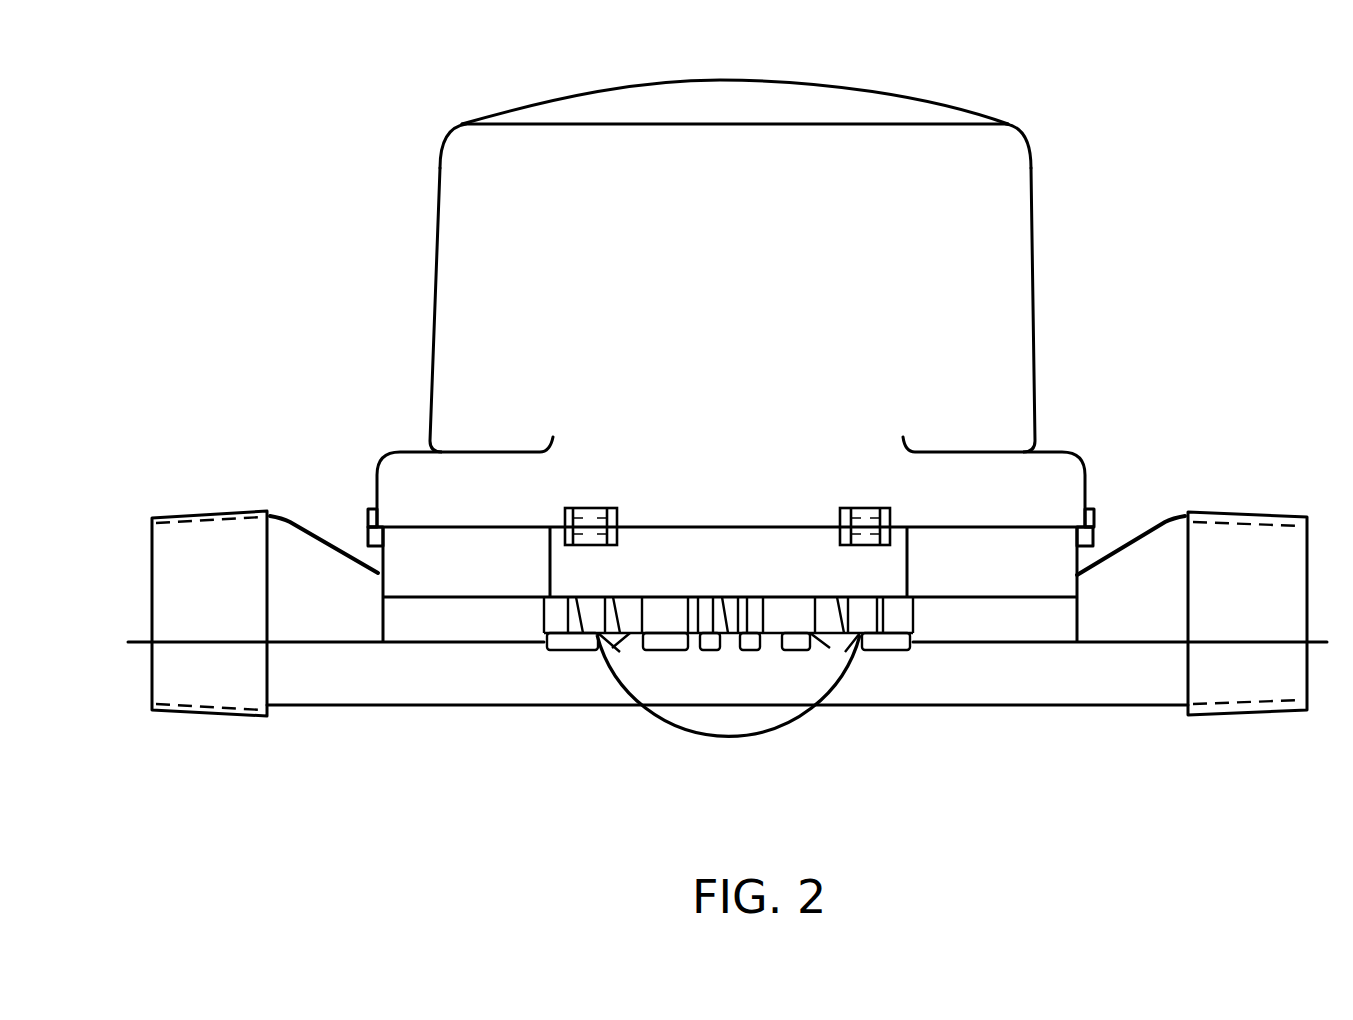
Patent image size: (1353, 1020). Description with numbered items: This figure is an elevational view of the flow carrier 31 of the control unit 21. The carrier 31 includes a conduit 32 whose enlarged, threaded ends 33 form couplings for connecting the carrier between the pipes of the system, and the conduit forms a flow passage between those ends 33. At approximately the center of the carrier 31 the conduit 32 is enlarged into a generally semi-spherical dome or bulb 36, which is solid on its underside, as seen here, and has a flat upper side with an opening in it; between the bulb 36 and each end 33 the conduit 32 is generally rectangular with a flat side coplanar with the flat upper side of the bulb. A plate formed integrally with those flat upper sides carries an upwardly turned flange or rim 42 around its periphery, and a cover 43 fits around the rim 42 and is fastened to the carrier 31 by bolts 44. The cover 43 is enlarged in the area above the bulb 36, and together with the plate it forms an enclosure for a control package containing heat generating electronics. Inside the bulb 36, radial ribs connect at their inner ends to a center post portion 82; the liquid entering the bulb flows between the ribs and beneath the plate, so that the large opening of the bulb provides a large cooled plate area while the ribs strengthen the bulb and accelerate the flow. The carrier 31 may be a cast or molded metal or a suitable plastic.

The control unit 21 is at (1066, 360).
The flow carrier 31 is at (1143, 491).
The conduit 32 is at (957, 693).
The ends 33 is at (195, 543).
The semi-spherical dome or bulb 36 is at (670, 698).
The flange or rim 42 is at (393, 567).
The cover 43 is at (724, 249).
The bolts 44 is at (870, 517).
The center post portion 82 is at (743, 652).